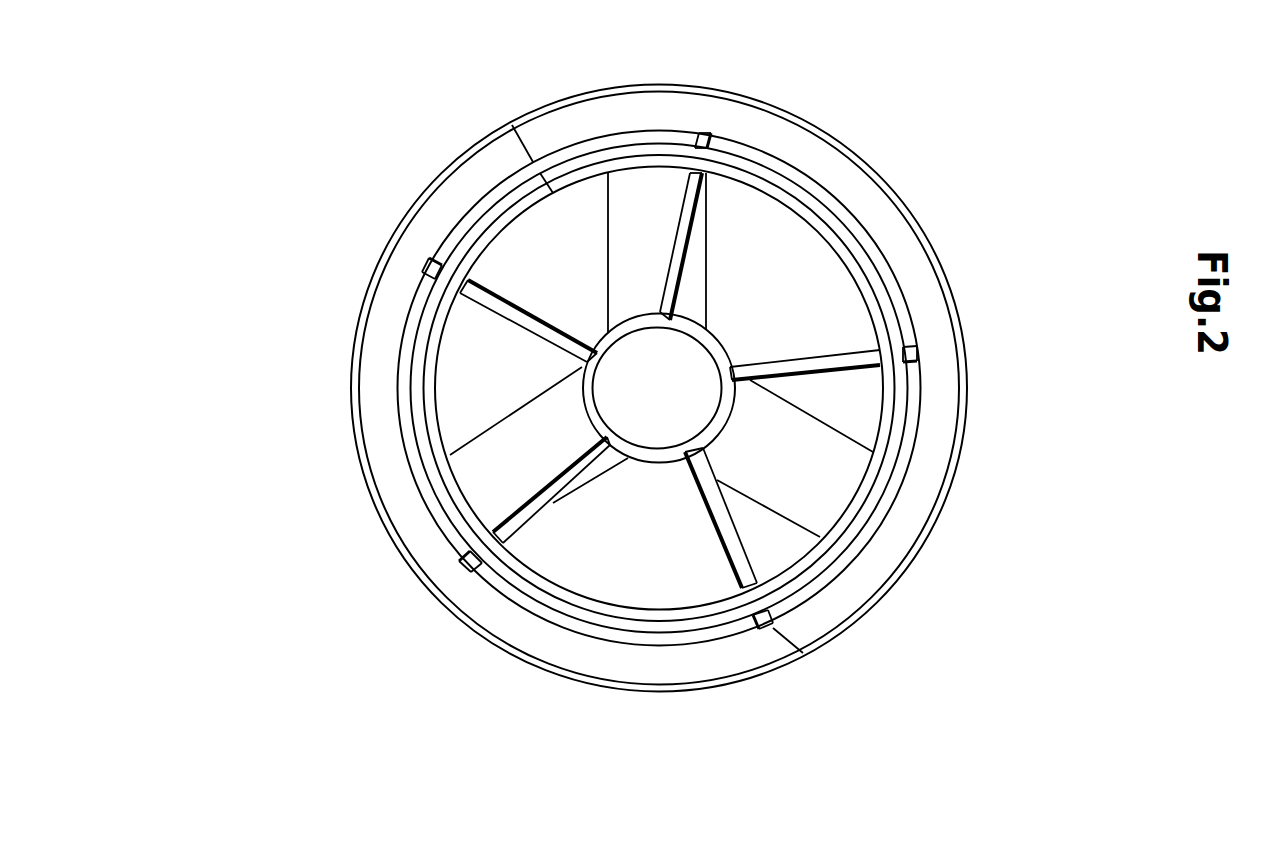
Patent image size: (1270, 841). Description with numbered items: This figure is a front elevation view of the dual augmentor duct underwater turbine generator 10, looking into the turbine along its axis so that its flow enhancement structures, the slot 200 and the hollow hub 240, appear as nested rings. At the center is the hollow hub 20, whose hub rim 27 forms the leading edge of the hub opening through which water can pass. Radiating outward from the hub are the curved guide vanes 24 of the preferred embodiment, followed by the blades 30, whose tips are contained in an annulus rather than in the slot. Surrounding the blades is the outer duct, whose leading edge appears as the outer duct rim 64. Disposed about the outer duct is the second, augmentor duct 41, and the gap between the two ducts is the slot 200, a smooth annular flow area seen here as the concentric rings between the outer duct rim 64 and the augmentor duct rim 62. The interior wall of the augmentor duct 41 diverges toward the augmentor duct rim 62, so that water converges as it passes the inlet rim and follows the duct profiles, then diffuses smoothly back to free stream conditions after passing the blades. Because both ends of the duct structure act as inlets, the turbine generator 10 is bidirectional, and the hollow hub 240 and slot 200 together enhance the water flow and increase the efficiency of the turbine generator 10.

The dual augmentor duct underwater turbine generator 10 is at (325, 205).
The hollow hub 20 is at (583, 390).
The guide vanes 24 is at (737, 543).
The hub rim 27 is at (633, 440).
The blades 30 is at (843, 458).
The augmentor duct 41 is at (807, 130).
The augmentor duct rim 62 is at (935, 232).
The outer duct rim 64 is at (875, 318).
The slot 200 is at (912, 390).
The hollow hub flow enhancement structure 240 is at (656, 387).